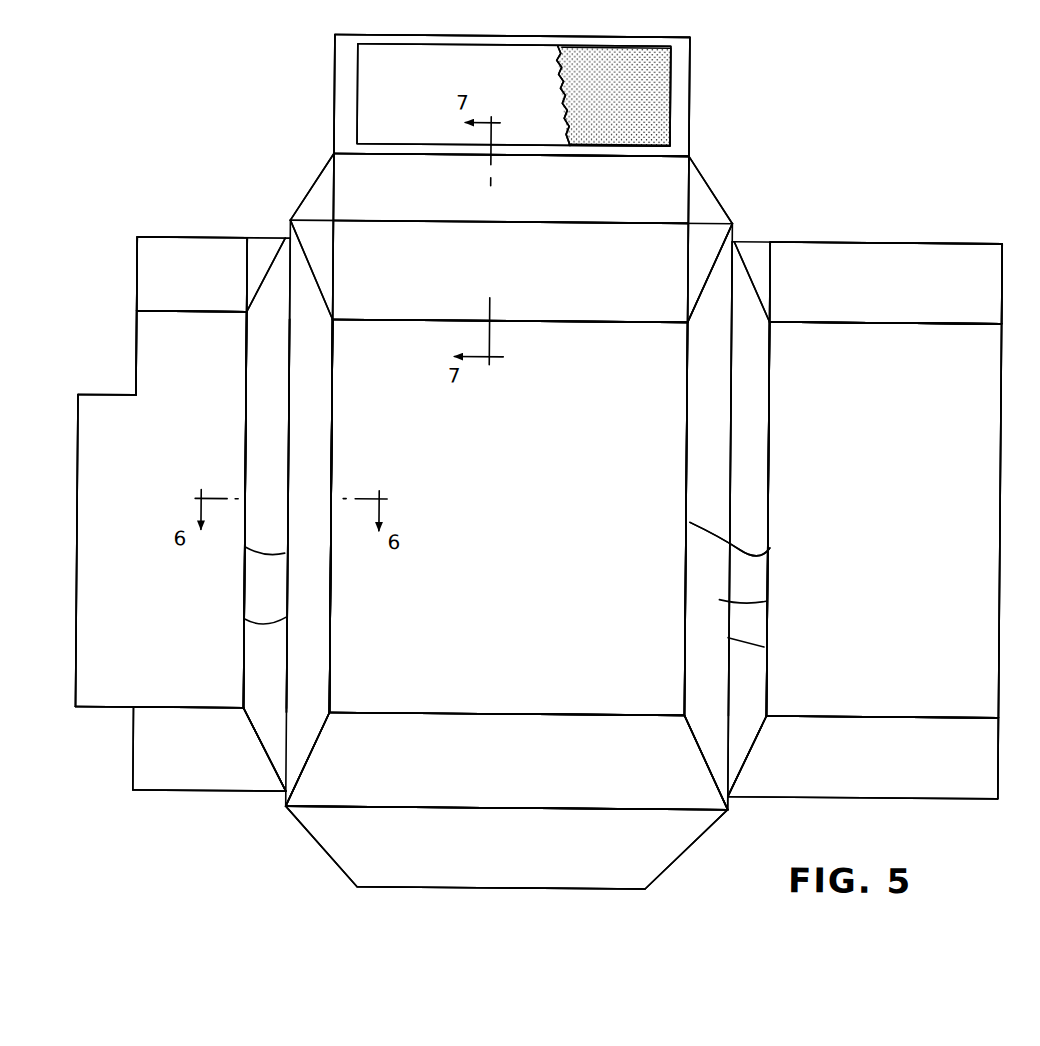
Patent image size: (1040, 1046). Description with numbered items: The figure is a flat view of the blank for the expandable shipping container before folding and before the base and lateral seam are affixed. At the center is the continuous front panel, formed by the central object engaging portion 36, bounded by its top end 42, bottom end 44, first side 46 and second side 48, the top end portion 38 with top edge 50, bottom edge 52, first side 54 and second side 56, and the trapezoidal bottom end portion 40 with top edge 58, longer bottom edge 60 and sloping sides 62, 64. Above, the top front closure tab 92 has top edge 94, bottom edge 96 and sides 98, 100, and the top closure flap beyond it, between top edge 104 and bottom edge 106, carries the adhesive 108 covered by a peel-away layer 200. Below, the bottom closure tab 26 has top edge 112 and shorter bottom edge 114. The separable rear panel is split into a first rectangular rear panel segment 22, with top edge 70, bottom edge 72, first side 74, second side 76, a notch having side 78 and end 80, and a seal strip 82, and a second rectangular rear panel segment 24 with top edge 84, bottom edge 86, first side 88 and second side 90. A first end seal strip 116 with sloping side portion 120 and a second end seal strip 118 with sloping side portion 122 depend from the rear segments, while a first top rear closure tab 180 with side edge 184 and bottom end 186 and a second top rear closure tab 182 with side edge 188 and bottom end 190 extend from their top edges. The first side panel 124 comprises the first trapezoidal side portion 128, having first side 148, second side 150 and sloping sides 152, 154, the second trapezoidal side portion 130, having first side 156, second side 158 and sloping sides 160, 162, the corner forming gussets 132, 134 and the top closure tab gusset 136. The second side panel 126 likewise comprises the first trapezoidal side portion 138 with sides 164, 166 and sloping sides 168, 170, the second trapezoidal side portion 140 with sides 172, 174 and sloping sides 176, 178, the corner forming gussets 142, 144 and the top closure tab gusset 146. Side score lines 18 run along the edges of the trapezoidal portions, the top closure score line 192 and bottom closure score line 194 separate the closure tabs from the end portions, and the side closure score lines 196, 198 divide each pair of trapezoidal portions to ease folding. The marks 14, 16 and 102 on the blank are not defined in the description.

The fold line 14 is at (429, 156).
The fold line 16 is at (150, 709).
The side score lines 18 is at (329, 410).
The first rectangular rear panel segment 22 is at (198, 393).
The second rectangular rear panel segment 24 is at (901, 439).
The bottom closure tab 26 is at (570, 857).
The central object engaging portion 36 is at (521, 492).
The top end portion 38 is at (556, 280).
The bottom end portion 40 is at (523, 769).
The top end 42 is at (591, 322).
The bottom end 44 is at (553, 714).
The first side 46 is at (330, 652).
The second side 48 is at (686, 594).
The top edge 50 is at (575, 223).
The bottom edge 52 is at (411, 321).
The first side 54 is at (333, 271).
The second side 56 is at (688, 294).
The top edge 58 is at (400, 716).
The bottom edge 60 is at (602, 807).
The first sloping side 62 is at (310, 755).
The second sloping side 64 is at (706, 768).
The top edge 70 is at (196, 316).
The bottom edge 72 is at (196, 709).
The first side 74 is at (77, 515).
The second side 76 is at (244, 568).
The notch side 78 is at (136, 331).
The notch end 80 is at (97, 398).
The seal strip 82 is at (134, 555).
The top edge 84 is at (849, 320).
The bottom edge 86 is at (864, 716).
The first side 88 is at (770, 519).
The second side 90 is at (1000, 535).
The top front closure tab 92 is at (505, 200).
The top edge 94 is at (582, 156).
The bottom edge 96 is at (547, 221).
The first side 98 is at (332, 172).
The second side 100 is at (685, 185).
The top closure flap 102 is at (690, 90).
The top edge 104 is at (511, 37).
The bottom edge 106 is at (556, 100).
The adhesive 108 is at (658, 67).
The top edge 112 is at (397, 810).
The bottom edge 114 is at (415, 888).
The first end seal strip 116 is at (192, 755).
The second end seal strip 118 is at (904, 777).
The sloping side portion 120 is at (264, 756).
The sloping side portion 122 is at (750, 771).
The first side panel 124 is at (269, 186).
The second side panel 126 is at (750, 180).
The first side panel first trapezoidal side portion 128 is at (257, 457).
The first side panel second trapezoidal side portion 130 is at (329, 450).
The first side panel first trapezoidal side portion corner forming gusset 132 is at (257, 245).
The first side panel second trapezoidal side portion corner forming gusset 134 is at (323, 242).
The first side top closure tab gusset 136 is at (317, 201).
The second side panel first trapezoidal side portion 138 is at (754, 446).
The second side panel second trapezoidal side portion 140 is at (688, 437).
The second side panel first trapezoidal side portion corner forming gusset 142 is at (758, 245).
The second side panel second trapezoidal side portion corner forming gusset 144 is at (698, 262).
The second side top closure tab gusset 146 is at (697, 192).
The first side 148 is at (285, 555).
The second side 150 is at (245, 621).
The sloping top side 152 is at (264, 473).
The sloping bottom side 154 is at (256, 732).
The first side 156 is at (330, 362).
The second side 158 is at (330, 387).
The sloping top side 160 is at (309, 515).
The sloping bottom side 162 is at (325, 765).
The first side 164 is at (765, 645).
The second side 166 is at (720, 598).
The sloping top side 168 is at (756, 286).
The sloping bottom side 170 is at (759, 737).
The first side 172 is at (770, 546).
The second side 174 is at (729, 553).
The sloping top side 176 is at (698, 293).
The sloping bottom side 178 is at (694, 733).
The first top rear closure tab 180 is at (179, 273).
The second top rear closure tab 182 is at (914, 271).
The side edge 184 is at (245, 270).
The bottom end 186 is at (216, 313).
The side edge 188 is at (886, 259).
The bottom end 190 is at (811, 318).
The top closure score line 192 is at (488, 223).
The bottom closure score line 194 is at (434, 808).
The first side closure score line 196 is at (329, 475).
The second side closure score line 198 is at (729, 482).
The peel-away layer 200 is at (425, 83).